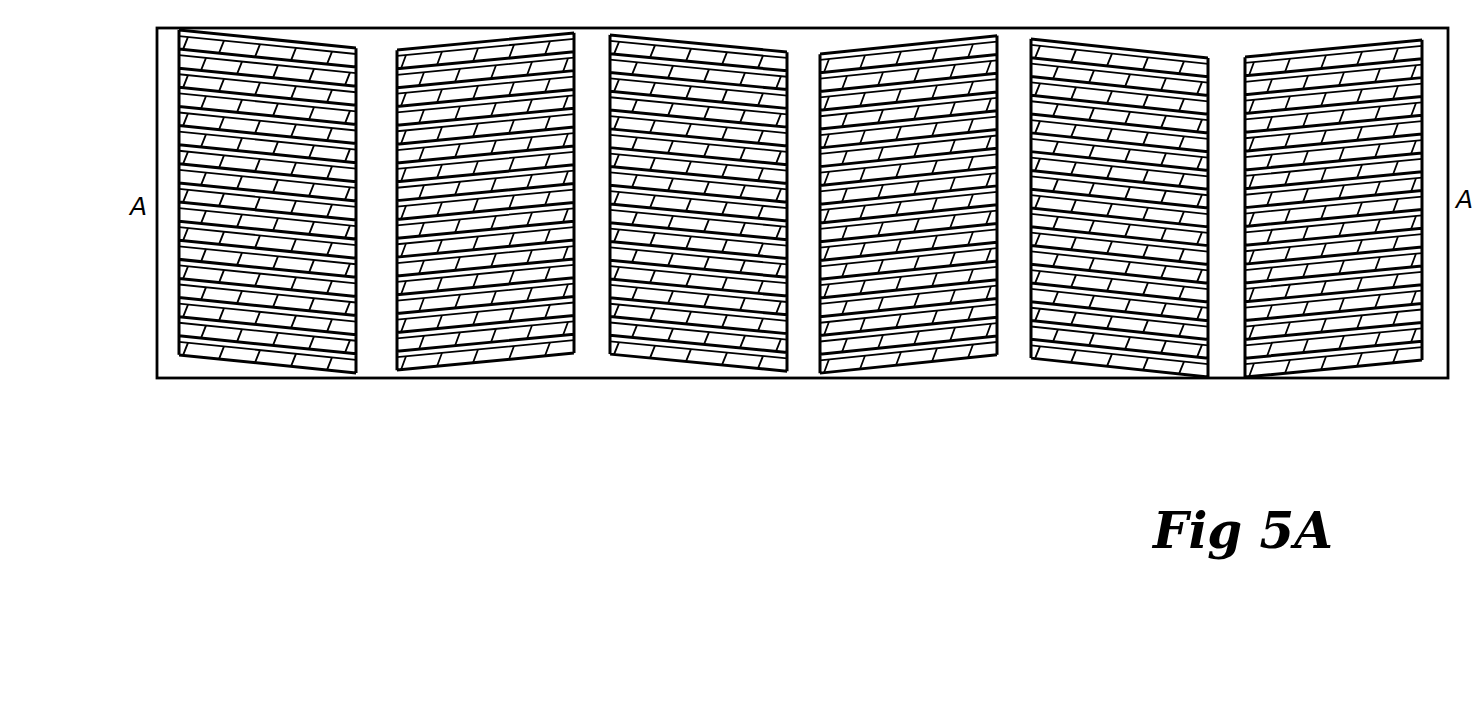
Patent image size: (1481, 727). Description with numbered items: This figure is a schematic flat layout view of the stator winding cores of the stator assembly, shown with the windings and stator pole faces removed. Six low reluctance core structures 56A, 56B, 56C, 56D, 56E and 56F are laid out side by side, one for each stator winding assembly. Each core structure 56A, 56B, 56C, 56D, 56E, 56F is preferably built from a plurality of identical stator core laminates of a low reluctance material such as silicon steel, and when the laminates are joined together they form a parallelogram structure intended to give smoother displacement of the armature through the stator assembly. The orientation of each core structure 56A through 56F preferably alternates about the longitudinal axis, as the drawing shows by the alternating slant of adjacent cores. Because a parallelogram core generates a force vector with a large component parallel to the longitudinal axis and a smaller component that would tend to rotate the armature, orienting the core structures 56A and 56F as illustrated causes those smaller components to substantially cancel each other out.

The core structure 56A is at (260, 385).
The core structure 56B is at (447, 382).
The core structure 56C is at (660, 383).
The core structure 56D is at (882, 383).
The core structure 56E is at (1086, 385).
The core structure 56F is at (1306, 385).